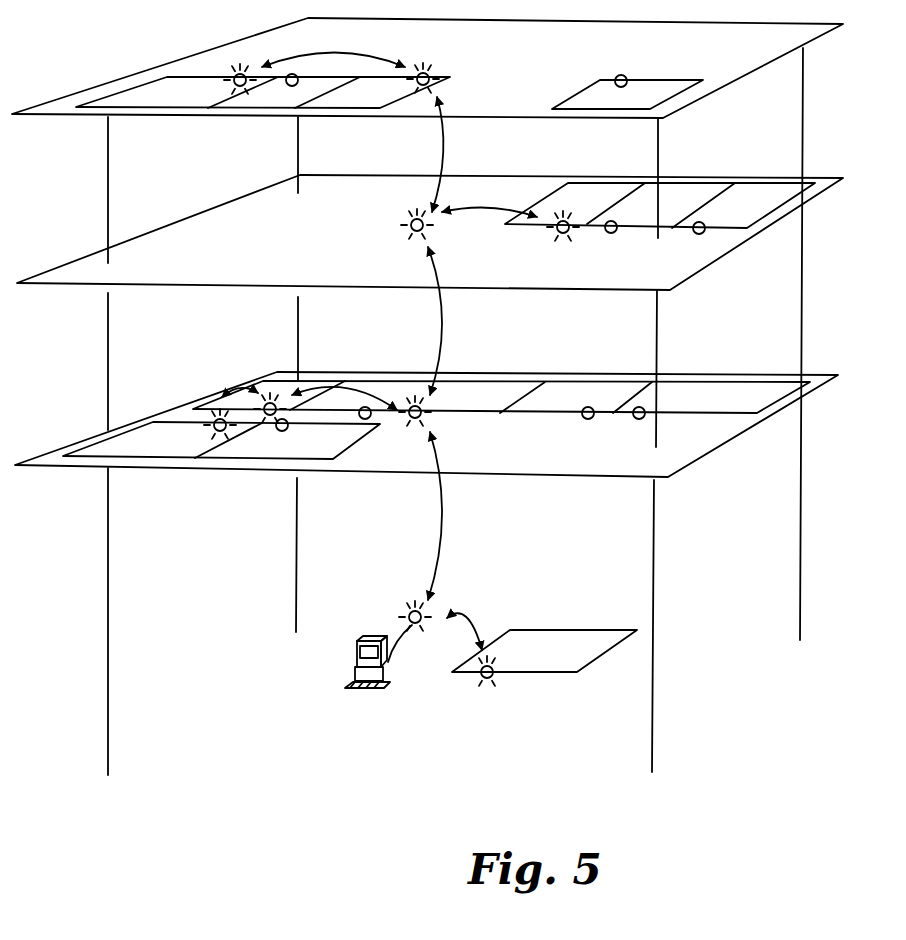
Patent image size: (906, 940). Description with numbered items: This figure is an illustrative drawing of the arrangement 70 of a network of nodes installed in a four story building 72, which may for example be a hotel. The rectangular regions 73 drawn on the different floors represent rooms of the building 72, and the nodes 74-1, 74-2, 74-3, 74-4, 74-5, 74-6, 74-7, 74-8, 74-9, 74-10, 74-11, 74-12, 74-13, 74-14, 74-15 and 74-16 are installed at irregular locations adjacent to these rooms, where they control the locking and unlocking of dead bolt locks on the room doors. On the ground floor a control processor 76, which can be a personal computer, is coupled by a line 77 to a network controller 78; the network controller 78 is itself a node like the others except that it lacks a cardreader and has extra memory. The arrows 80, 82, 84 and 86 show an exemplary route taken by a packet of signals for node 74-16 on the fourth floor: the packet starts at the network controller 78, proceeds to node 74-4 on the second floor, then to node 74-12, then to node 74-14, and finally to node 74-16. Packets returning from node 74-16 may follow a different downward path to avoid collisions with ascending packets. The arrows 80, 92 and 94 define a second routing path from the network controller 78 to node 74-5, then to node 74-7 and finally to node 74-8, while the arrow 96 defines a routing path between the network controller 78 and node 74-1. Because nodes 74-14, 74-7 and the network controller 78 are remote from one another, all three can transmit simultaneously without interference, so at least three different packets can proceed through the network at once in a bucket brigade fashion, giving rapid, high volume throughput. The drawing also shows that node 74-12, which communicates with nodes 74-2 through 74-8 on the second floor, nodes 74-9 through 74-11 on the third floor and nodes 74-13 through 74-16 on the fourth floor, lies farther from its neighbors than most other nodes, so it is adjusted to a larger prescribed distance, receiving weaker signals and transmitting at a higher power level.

The building communication system 70 is at (200, 508).
The four story building 72 is at (822, 310).
The rectangular regions 73 is at (111, 98).
The node 74-1 is at (494, 667).
The node 74-2 is at (650, 407).
The node 74-3 is at (588, 406).
The node 74-4 is at (424, 410).
The node 74-5 is at (366, 406).
The node 74-6 is at (283, 432).
The node 74-7 is at (270, 400).
The node 74-8 is at (213, 428).
The node 74-9 is at (705, 224).
The node 74-10 is at (622, 212).
The node 74-11 is at (565, 220).
The node 74-12 is at (424, 230).
The node 74-13 is at (627, 78).
The node 74-14 is at (414, 83).
The node 74-15 is at (297, 100).
The node 74-16 is at (232, 82).
The control processor 76 is at (355, 658).
The line 77 is at (402, 660).
The network controller 78 is at (413, 608).
The arrow 80 is at (443, 545).
The arrow 82 is at (443, 330).
The arrow 84 is at (443, 150).
The arrow 86 is at (320, 53).
The arrow 92 is at (338, 382).
The arrow 94 is at (238, 384).
The arrow 96 is at (462, 616).